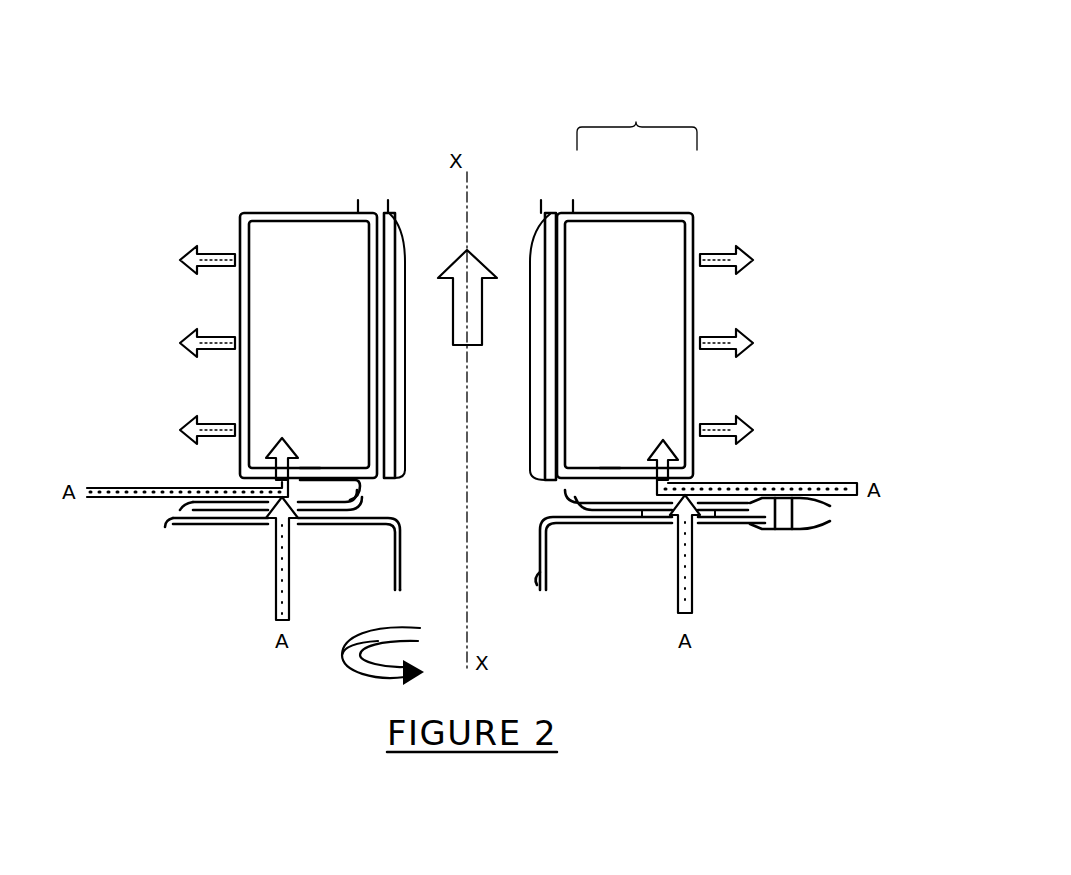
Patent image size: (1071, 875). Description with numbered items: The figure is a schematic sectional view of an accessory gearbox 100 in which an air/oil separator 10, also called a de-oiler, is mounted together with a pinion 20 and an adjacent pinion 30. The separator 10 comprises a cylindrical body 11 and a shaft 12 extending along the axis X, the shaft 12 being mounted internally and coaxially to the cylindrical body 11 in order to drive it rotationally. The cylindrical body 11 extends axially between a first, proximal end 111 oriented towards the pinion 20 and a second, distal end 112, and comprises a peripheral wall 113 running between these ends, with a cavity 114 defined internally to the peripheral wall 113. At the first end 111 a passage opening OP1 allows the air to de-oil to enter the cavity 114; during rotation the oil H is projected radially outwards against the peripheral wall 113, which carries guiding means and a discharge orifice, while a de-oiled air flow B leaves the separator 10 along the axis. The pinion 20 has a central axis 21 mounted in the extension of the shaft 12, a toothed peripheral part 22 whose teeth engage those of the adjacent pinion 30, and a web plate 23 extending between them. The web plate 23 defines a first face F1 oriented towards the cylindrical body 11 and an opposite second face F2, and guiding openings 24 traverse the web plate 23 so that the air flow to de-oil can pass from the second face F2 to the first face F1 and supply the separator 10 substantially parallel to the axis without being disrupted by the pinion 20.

The accessory gearbox 100 is at (740, 63).
The air/oil separator 10 is at (636, 122).
The cylindrical body 11 is at (640, 213).
The shaft 12 is at (552, 215).
The pinion 20 is at (257, 540).
The central axis 21 is at (541, 587).
The toothed peripheral part 22 is at (173, 522).
The web plate 23 is at (240, 522).
The guiding openings 24 is at (666, 528).
The adjacent pinion 30 is at (824, 533).
The first end 111 is at (304, 482).
The second end 112 is at (283, 213).
The peripheral wall 113 is at (696, 224).
The cavity 114 is at (309, 344).
The passage opening OP1 is at (313, 452).
The first face F1 is at (196, 499).
The second face F2 is at (205, 530).
The oil flow H is at (466, 345).
The de-oiled air flow B is at (467, 284).